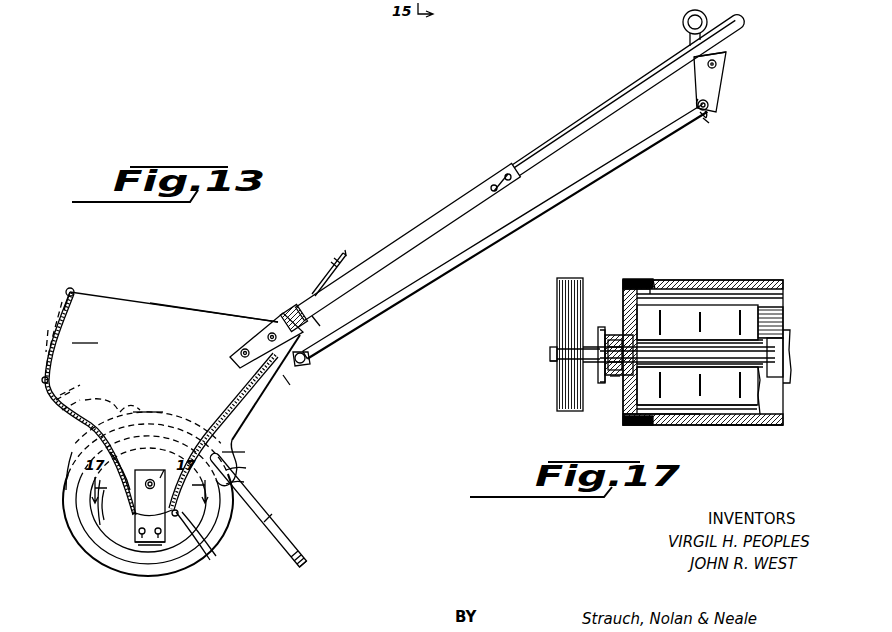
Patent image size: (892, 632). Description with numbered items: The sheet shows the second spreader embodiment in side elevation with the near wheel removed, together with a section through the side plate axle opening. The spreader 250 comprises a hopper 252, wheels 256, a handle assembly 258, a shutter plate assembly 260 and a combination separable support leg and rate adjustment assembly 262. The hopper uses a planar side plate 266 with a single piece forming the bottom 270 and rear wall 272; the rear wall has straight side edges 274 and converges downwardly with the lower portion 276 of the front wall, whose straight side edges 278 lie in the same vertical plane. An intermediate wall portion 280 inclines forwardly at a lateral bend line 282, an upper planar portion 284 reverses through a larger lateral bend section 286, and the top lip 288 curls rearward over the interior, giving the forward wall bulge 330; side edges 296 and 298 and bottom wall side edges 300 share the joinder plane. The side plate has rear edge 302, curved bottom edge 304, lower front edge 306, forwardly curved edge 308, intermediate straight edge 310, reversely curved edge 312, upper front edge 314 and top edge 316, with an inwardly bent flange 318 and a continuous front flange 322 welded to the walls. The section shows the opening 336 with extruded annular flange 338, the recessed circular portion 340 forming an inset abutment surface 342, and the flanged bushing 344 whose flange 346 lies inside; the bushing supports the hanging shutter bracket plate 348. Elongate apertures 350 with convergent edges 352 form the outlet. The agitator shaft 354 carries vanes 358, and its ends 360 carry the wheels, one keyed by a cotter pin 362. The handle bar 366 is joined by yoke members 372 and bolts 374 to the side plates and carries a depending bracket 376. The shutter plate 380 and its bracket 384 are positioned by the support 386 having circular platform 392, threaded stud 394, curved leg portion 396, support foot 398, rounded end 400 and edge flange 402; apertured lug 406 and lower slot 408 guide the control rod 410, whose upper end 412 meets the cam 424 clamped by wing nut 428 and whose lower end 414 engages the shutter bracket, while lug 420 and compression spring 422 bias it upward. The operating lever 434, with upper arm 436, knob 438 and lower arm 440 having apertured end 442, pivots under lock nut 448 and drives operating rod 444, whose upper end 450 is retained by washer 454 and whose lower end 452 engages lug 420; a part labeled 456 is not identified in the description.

In FIG. 13, the material spreader 250 is at (249, 264).
In FIG. 13, the hopper 252 is at (143, 290).
In FIG. 13, the wheels 256 is at (82, 536).
In FIG. 17, the wheels 256 is at (556, 308).
In FIG. 13, the handle assembly 258 is at (484, 170).
In FIG. 13, the shutter plate assembly 260 is at (138, 555).
In FIG. 13, the combination separable support leg and rate adjustment assembly 262 is at (283, 398).
In FIG. 13, the side plate 266 is at (203, 323).
In FIG. 13, the bottom wall 270 is at (104, 516).
In FIG. 17, the bottom wall 270 is at (770, 402).
In FIG. 17, the rear wall 272 is at (760, 284).
In FIG. 17, the rear wall side edges 274 is at (633, 280).
In FIG. 13, the lower portion of front wall 276 is at (75, 448).
In FIG. 17, the lower portion of front wall 276 is at (724, 428).
In FIG. 13, the lower front wall side edges 278 is at (104, 458).
In FIG. 17, the lower front wall side edges 278 is at (632, 427).
In FIG. 13, the intermediate wall portion 280 is at (64, 410).
In FIG. 13, the lateral bend line 282 is at (148, 419).
In FIG. 13, the upper planar portion 284 is at (64, 300).
In FIG. 13, the lateral bend section 286 is at (45, 378).
In FIG. 13, the top lip of front wall 288 is at (72, 288).
In FIG. 13, the side edges of upper front wall portion 296 is at (64, 316).
In FIG. 13, the side edges of intermediate front wall portion 298 is at (85, 404).
In FIG. 13, the bottom wall side edges 300 is at (103, 525).
In FIG. 13, the rear edge of side plate 302 is at (238, 456).
In FIG. 17, the rear edge of side plate 302 is at (650, 282).
In FIG. 13, the bottom edge of side plate 304 is at (104, 502).
In FIG. 13, the lower front edge of side plate 306 is at (100, 487).
In FIG. 13, the forwardly curved edge 308 is at (126, 408).
In FIG. 13, the intermediate front edge 310 is at (62, 400).
In FIG. 13, the reversely curved edge 312 is at (60, 390).
In FIG. 13, the upper front edge of side plate 314 is at (48, 341).
In FIG. 13, the top edge of side plate 316 is at (110, 296).
In FIG. 17, the rear flange 318 is at (680, 285).
In FIG. 17, the front flange 322 is at (655, 428).
In FIG. 13, the forward wall bulge 330 is at (86, 336).
In FIG. 17, the opening 336 is at (608, 378).
In FIG. 17, the annular flange 338 is at (612, 388).
In FIG. 17, the recessed circular portion 340 is at (638, 340).
In FIG. 17, the inset abutment surface 342 is at (644, 348).
In FIG. 13, the radially flanged bushing 344 is at (150, 480).
In FIG. 17, the radially flanged bushing 344 is at (668, 350).
In FIG. 17, the bushing flange 346 is at (654, 368).
In FIG. 13, the shutter bracket plates 348 is at (166, 478).
In FIG. 17, the shutter bracket plates 348 is at (590, 374).
In FIG. 17, the elongate apertures 350 is at (775, 360).
In FIG. 17, the aperture front edges 352 is at (784, 378).
In FIG. 13, the agitator shaft 354 is at (150, 514).
In FIG. 17, the agitator shaft 354 is at (616, 336).
In FIG. 17, the vanes 358 is at (768, 320).
In FIG. 17, the shaft ends 360 is at (550, 350).
In FIG. 17, the cotter pin 362 is at (548, 362).
In FIG. 13, the tubular handle bar 366 is at (566, 133).
In FIG. 13, the yoke members 372 is at (426, 224).
In FIG. 13, the bolts 374 is at (514, 160).
In FIG. 13, the depending apertured bracket 376 is at (726, 51).
In FIG. 13, the shutter plate 380 is at (160, 548).
In FIG. 17, the shutter plate 380 is at (601, 326).
In FIG. 13, the shutter bracket 384 is at (194, 545).
In FIG. 13, the support structure 386 is at (316, 327).
In FIG. 13, the circular platform 392 is at (333, 258).
In FIG. 13, the threaded stud 394 is at (318, 283).
In FIG. 13, the curved leg portion 396 is at (240, 470).
In FIG. 13, the support foot 398 is at (270, 530).
In FIG. 13, the rounded end 400 is at (310, 567).
In FIG. 13, the edge flange 402 is at (288, 546).
In FIG. 13, the apertured lug 406 is at (246, 422).
In FIG. 13, the lower elongate slot 408 is at (281, 376).
In FIG. 13, the shutter control rod 410 is at (238, 484).
In FIG. 13, the upper end of control rod 412 is at (291, 312).
In FIG. 13, the lower end of control rod 414 is at (205, 530).
In FIG. 13, the control rod lug 420 is at (308, 362).
In FIG. 13, the compression spring 422 is at (264, 405).
In FIG. 13, the cam 424 is at (334, 267).
In FIG. 13, the wing nut 428 is at (297, 300).
In FIG. 13, the operating lever 434 is at (720, 82).
In FIG. 13, the upper arm 436 is at (684, 41).
In FIG. 13, the knob 438 is at (683, 20).
In FIG. 13, the lower arm 440 is at (709, 105).
In FIG. 13, the apertured end 442 is at (710, 120).
In FIG. 13, the operating rod 444 is at (606, 166).
In FIG. 13, the lock nut 448 is at (717, 65).
In FIG. 13, the upper operating rod end 450 is at (706, 126).
In FIG. 13, the lower operating rod end 452 is at (310, 358).
In FIG. 13, the washer 454 is at (712, 114).
In FIG. 13, the bracket edge 456 is at (696, 101).